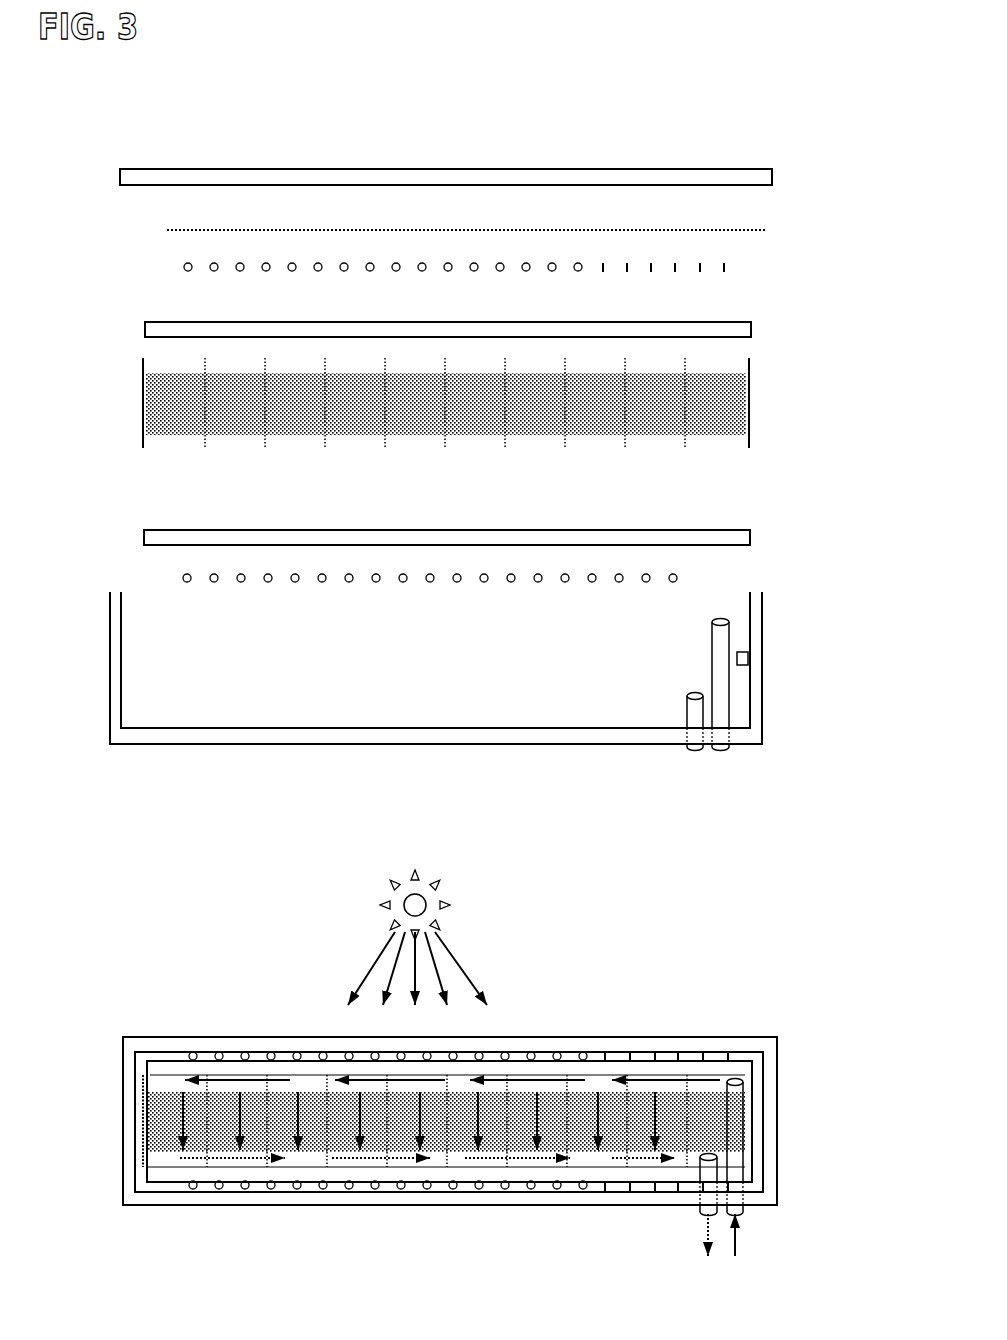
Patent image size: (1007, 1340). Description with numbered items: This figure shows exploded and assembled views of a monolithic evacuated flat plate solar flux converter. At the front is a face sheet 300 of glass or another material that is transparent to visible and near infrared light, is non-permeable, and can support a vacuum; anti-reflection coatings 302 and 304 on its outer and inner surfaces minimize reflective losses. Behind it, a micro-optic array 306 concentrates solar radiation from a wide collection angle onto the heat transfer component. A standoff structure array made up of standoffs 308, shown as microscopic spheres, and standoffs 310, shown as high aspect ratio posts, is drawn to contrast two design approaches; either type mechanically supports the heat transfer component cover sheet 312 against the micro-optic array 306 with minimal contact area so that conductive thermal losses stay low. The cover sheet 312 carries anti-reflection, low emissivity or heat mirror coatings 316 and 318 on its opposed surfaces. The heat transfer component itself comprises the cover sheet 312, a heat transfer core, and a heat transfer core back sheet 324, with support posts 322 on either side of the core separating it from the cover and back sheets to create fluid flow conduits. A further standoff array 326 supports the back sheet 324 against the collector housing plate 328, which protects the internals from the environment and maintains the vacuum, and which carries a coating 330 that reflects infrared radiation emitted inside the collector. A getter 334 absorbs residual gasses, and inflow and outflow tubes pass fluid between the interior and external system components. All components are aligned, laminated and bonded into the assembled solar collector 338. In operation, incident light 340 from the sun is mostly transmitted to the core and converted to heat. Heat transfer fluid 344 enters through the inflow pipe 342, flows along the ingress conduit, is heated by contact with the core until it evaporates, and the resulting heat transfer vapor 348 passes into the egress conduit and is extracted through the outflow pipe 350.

The face sheet 300 is at (118, 178).
The anti-reflection coating 302 is at (758, 158).
The anti-reflection coating 304 is at (770, 193).
The micro-optic array 306 is at (167, 231).
The standoffs 308 is at (178, 268).
The standoffs 310 is at (737, 270).
The heat transfer component cover sheet 312 is at (130, 327).
The coating 316 is at (750, 318).
The coating 318 is at (745, 342).
The support posts 322 is at (696, 447).
The heat transfer core back sheet 324 is at (135, 535).
The standoff array 326 is at (178, 576).
The collector housing plate 328 is at (455, 696).
The coating 330 is at (175, 720).
The getter 334 is at (750, 660).
The solar collector 338 is at (431, 1124).
The incident light 340 is at (472, 965).
The inflow pipe 342 is at (745, 1245).
The heat transfer fluid 344 is at (660, 1077).
The heat transfer vapor 348 is at (245, 1160).
The outflow pipe 350 is at (703, 1245).